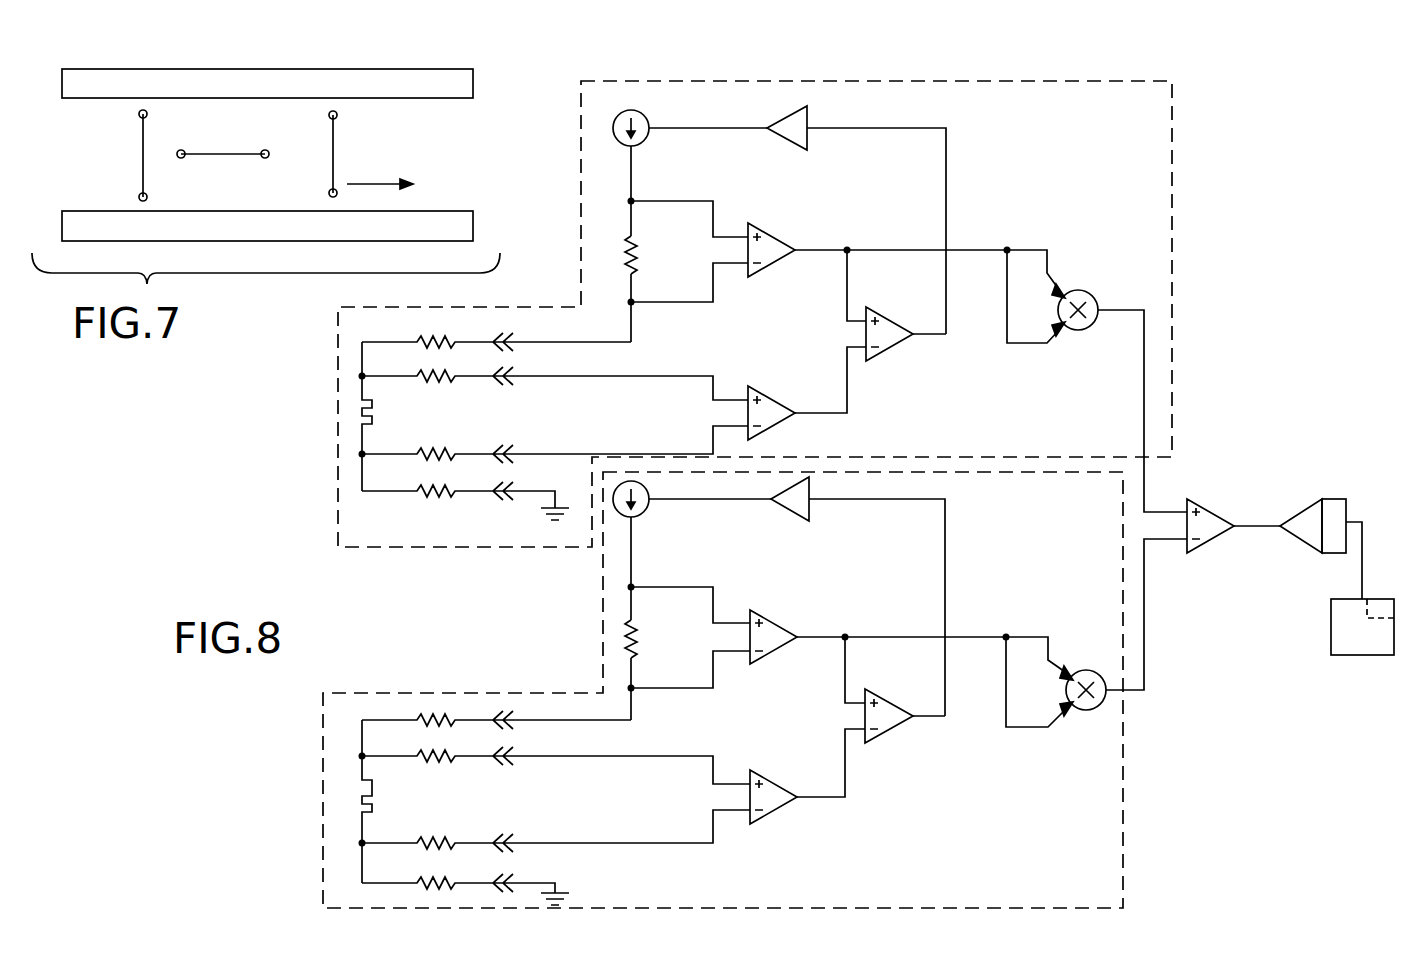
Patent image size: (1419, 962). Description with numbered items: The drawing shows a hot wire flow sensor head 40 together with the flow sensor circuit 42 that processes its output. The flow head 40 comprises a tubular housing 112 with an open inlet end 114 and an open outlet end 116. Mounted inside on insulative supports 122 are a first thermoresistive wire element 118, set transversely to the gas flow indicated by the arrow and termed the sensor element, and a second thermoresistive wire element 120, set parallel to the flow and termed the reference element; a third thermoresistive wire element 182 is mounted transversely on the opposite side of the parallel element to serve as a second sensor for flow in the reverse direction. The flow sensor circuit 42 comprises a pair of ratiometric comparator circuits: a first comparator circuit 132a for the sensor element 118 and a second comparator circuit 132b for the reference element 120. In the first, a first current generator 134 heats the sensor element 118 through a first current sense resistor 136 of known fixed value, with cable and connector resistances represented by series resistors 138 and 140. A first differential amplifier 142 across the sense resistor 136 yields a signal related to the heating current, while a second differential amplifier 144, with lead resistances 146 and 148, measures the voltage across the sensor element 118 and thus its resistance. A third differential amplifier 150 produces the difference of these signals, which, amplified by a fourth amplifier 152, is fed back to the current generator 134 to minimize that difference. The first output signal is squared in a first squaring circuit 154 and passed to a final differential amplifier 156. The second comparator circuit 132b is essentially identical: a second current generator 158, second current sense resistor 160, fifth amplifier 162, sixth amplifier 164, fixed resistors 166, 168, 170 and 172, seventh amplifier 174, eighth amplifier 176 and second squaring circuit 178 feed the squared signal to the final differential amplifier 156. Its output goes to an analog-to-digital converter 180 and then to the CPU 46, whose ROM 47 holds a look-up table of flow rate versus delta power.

In FIG. 7, the hot wire flow sensor head 40 is at (269, 125).
In FIG. 7, the tubular housing 112 is at (269, 137).
In FIG. 7, the open inlet end 114 is at (75, 99).
In FIG. 7, the open outlet end 116 is at (462, 212).
In FIG. 7, the first thermoresistive wire element 118 is at (145, 141).
In FIG. 8, the first thermoresistive wire element 118 is at (357, 418).
In FIG. 7, the second thermoresistive wire element 120 is at (229, 153).
In FIG. 8, the second thermoresistive wire element 120 is at (357, 805).
In FIG. 7, the insulative supports 122 is at (139, 115).
In FIG. 7, the third thermoresistive wire element 182 is at (336, 148).
In FIG. 8, the flow sensor circuit 42 is at (1174, 293).
In FIG. 8, the first comparator circuit 132a is at (706, 80).
In FIG. 8, the second comparator circuit 132b is at (603, 652).
In FIG. 8, the first current generator 134 is at (642, 118).
In FIG. 8, the first current sense resistor 136 is at (636, 254).
In FIG. 8, the series resistor 138 is at (441, 340).
In FIG. 8, the series resistor 140 is at (433, 500).
In FIG. 8, the first differential amplifier 142 is at (770, 237).
In FIG. 8, the second differential amplifier 144 is at (773, 396).
In FIG. 8, the resistor 146 is at (444, 379).
In FIG. 8, the resistor 148 is at (441, 449).
In FIG. 8, the third differential amplifier 150 is at (882, 351).
In FIG. 8, the fourth amplifier 152 is at (776, 141).
In FIG. 8, the first squaring circuit 154 is at (1094, 292).
In FIG. 8, the final differential amplifier 156 is at (1209, 511).
In FIG. 8, the second current generator 158 is at (643, 513).
In FIG. 8, the second current sense resistor 160 is at (636, 638).
In FIG. 8, the fifth amplifier 162 is at (777, 622).
In FIG. 8, the sixth amplifier 164 is at (776, 783).
In FIG. 8, the fixed resistor 166 is at (437, 716).
In FIG. 8, the fixed resistor 168 is at (442, 882).
In FIG. 8, the fixed resistor 170 is at (440, 761).
In FIG. 8, the fixed resistor 172 is at (437, 842).
In FIG. 8, the seventh amplifier 174 is at (892, 697).
In FIG. 8, the eighth amplifier 176 is at (794, 518).
In FIG. 8, the second squaring circuit 178 is at (1093, 672).
In FIG. 8, the analog-to-digital converter 180 is at (1331, 498).
In FIG. 8, the CPU 46 is at (1348, 656).
In FIG. 8, the ROM 47 is at (1381, 612).